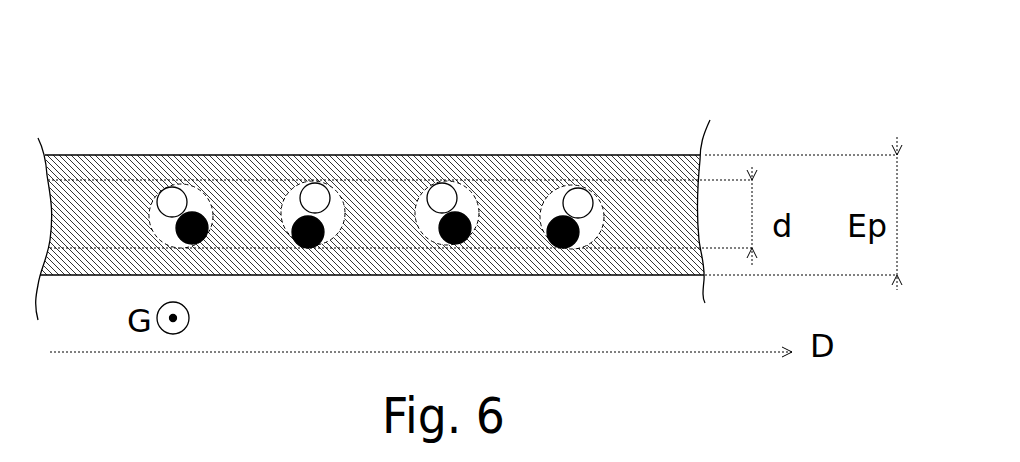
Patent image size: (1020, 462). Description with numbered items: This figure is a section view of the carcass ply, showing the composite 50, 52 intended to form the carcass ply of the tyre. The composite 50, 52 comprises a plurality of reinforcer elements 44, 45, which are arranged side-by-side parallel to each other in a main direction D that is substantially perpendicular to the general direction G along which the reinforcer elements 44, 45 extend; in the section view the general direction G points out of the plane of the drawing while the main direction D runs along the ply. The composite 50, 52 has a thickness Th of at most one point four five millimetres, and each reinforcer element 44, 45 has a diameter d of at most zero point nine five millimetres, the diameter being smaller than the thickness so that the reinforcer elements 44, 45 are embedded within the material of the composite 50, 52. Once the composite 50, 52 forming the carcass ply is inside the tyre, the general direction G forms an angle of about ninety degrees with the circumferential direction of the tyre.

The composite 50 is at (375, 184).
The composite 52 is at (140, 142).
The reinforcer element 44 is at (376, 168).
The reinforcer element 45 is at (313, 177).